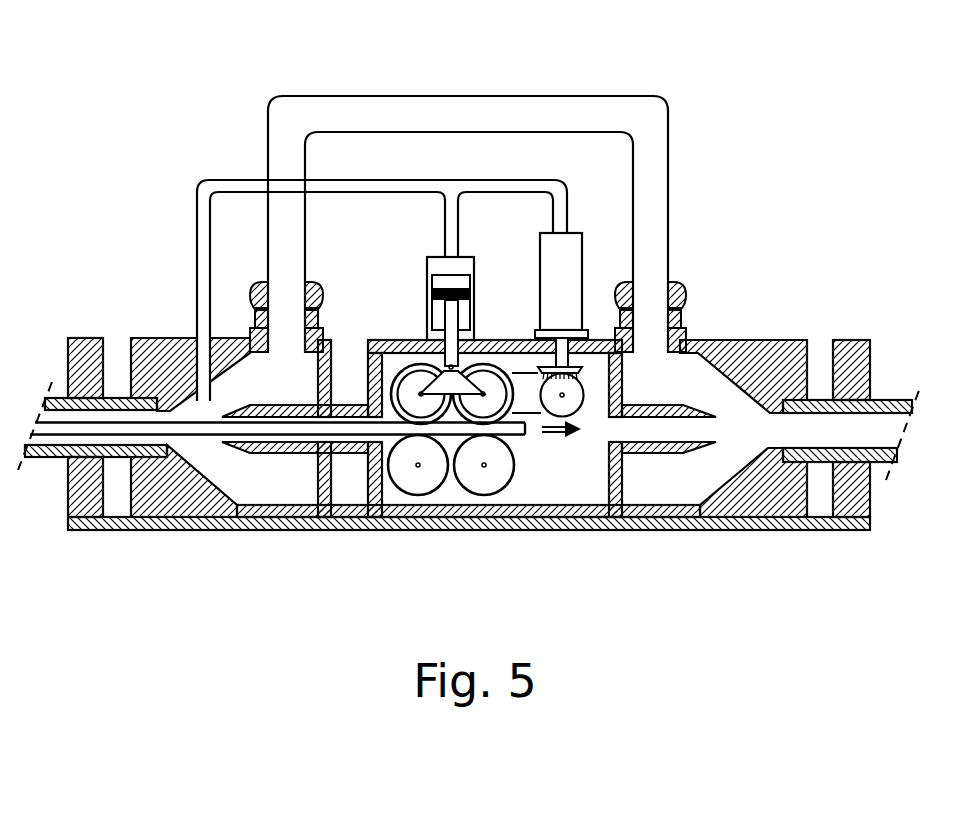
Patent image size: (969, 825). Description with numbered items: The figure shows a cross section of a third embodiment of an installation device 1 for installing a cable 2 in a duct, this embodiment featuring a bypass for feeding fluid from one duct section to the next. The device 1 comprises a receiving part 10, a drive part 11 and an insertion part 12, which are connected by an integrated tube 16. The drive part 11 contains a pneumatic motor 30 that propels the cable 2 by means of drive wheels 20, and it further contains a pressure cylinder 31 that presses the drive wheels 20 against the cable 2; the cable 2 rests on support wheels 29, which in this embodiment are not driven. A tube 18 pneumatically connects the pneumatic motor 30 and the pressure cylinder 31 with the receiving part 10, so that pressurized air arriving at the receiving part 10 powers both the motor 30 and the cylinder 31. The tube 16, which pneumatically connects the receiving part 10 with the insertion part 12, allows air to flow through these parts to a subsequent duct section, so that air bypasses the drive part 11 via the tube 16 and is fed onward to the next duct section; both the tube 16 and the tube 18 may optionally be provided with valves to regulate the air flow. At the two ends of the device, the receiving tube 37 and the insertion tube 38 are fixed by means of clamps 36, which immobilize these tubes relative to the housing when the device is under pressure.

The installation device 1 is at (826, 124).
The cable 2 is at (520, 437).
The receiving part 10 is at (163, 338).
The drive part 11 is at (485, 338).
The insertion part 12 is at (746, 340).
The integrated tube 16 is at (469, 96).
The tube 18 is at (233, 180).
The drive wheels 20 is at (398, 362).
The support wheels 29 is at (483, 495).
The pneumatic motor 30 is at (583, 270).
The pressure cylinder 31 is at (477, 270).
The clamps 36 is at (85, 338).
The receiving tube 37 is at (45, 462).
The insertion tube 38 is at (892, 400).